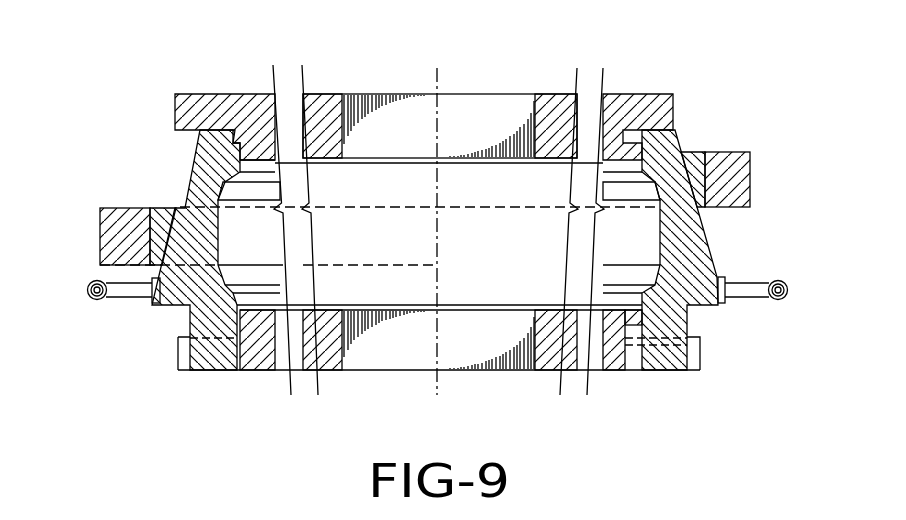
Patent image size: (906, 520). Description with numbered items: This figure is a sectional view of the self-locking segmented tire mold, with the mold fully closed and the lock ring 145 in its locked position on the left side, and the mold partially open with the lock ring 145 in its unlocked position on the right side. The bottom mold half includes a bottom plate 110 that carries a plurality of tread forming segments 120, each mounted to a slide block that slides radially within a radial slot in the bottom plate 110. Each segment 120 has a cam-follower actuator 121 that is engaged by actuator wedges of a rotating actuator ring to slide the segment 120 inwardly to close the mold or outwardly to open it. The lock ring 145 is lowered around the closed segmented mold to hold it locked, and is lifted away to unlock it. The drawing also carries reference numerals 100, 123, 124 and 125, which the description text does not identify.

The stator housing / upper flange 100 is at (620, 93).
The bottom plate 110 is at (608, 373).
The tread forming segment 120 is at (207, 160).
The cam-follower actuator 121 is at (106, 304).
The connector block 123 is at (152, 306).
The eye ring 124 is at (84, 276).
The rod 125 is at (101, 300).
The lock ring 145 is at (100, 223).